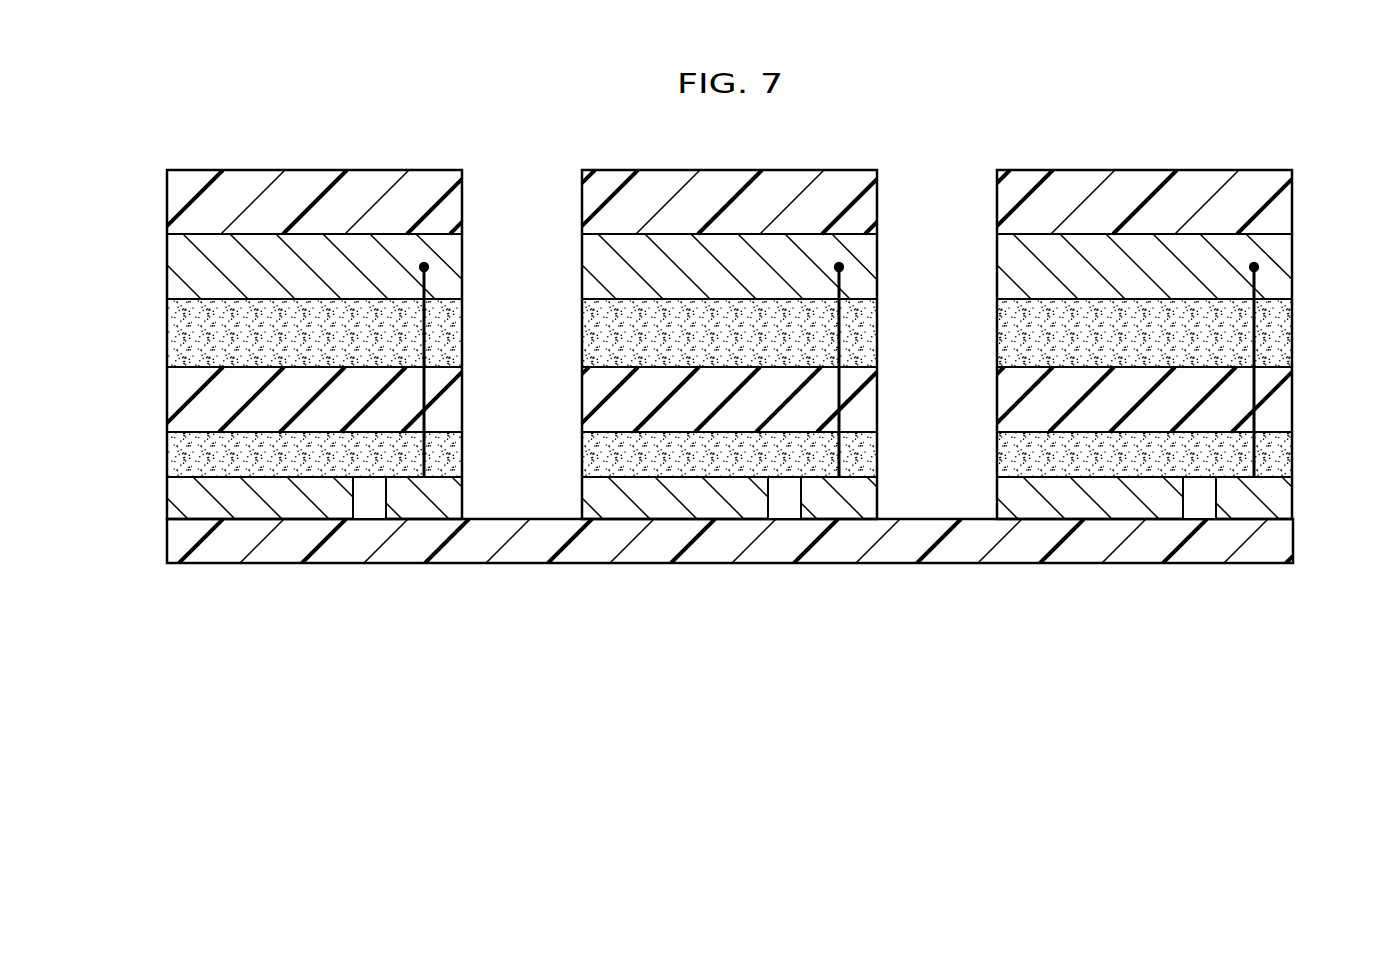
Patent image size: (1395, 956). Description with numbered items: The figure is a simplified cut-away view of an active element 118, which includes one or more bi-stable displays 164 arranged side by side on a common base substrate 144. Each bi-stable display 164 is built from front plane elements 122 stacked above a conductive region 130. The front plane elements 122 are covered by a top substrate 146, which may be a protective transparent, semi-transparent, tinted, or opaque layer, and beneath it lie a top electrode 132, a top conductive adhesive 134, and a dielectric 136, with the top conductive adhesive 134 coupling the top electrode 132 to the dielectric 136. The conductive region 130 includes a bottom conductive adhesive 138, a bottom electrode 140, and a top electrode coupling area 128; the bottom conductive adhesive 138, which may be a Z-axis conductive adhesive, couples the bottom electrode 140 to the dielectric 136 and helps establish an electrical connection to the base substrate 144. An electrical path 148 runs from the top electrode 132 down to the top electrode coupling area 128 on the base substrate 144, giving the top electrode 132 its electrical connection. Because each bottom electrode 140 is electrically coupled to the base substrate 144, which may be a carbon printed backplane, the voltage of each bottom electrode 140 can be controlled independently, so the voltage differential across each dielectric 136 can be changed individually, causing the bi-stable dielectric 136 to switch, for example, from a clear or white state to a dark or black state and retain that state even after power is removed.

The active element 118 is at (504, 104).
The front plane elements 122 is at (715, 275).
The top electrode coupling area 128 is at (418, 510).
The conductive region 130 is at (731, 525).
The top electrode 132 is at (453, 252).
The top conductive adhesive 134 is at (453, 335).
The dielectric 136 is at (746, 402).
The bottom conductive adhesive 138 is at (453, 450).
The bottom electrode 140 is at (247, 510).
The base substrate 144 is at (528, 545).
The top substrate 146 is at (313, 178).
The electrical path 148 is at (423, 343).
The bi-stable display 164 is at (250, 147).